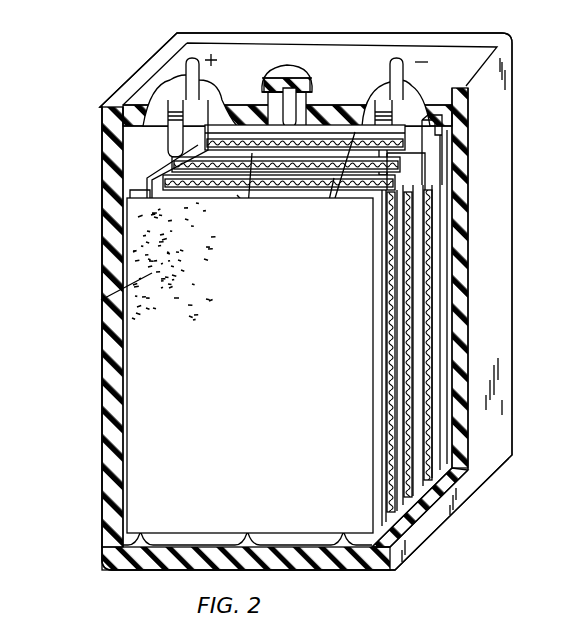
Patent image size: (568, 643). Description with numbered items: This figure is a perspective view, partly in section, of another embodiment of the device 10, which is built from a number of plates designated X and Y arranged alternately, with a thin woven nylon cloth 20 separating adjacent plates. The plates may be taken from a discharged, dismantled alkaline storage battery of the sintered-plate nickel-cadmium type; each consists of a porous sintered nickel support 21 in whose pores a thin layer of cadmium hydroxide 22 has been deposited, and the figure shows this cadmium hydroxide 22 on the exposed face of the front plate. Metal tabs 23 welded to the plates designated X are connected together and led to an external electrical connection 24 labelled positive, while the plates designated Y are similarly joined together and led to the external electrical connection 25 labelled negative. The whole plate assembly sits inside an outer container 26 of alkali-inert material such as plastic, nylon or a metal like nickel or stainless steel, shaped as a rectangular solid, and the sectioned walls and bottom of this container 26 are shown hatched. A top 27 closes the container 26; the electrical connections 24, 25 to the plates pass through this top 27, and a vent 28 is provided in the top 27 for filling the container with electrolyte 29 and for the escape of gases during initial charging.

The storage cell 10 is at (518, 246).
The thin woven nylon cloth 20 is at (392, 190).
The porous sintered nickel support 21 is at (360, 303).
The cadmium hydroxide 22 is at (152, 247).
The metal tabs 23 is at (430, 120).
The external electrical connection 24 is at (190, 60).
The external electrical connection 25 is at (398, 58).
The outer container 26 is at (512, 330).
The top 27 is at (307, 50).
The vent 28 is at (278, 68).
The electrolyte 29 is at (137, 177).